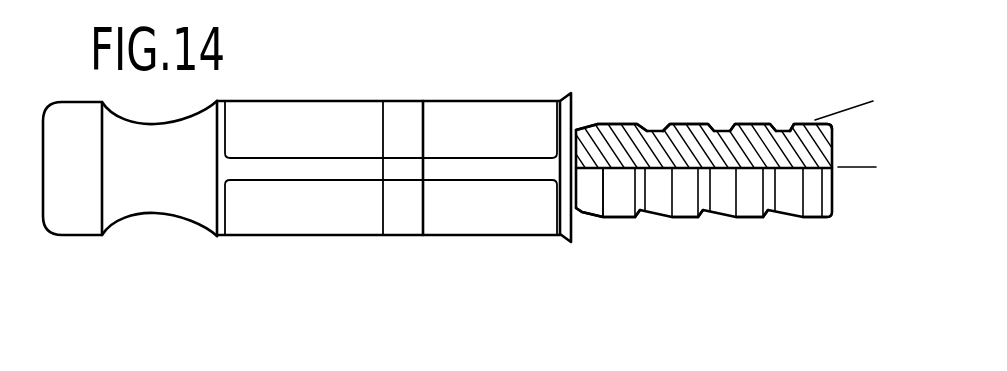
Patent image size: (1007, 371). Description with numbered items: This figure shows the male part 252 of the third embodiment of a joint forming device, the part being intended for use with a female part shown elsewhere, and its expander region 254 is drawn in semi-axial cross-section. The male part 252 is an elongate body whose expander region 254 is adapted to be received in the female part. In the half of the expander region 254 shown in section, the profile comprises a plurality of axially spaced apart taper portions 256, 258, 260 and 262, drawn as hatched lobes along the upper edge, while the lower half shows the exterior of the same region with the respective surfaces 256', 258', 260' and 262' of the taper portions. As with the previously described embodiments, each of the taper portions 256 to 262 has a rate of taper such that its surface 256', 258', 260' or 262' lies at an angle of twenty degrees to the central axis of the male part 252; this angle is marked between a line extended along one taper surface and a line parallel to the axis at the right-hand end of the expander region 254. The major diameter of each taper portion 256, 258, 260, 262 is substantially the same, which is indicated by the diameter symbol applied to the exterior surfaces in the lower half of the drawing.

The male part 252 is at (398, 262).
The expander region 254 is at (703, 246).
The taper portion 256 is at (612, 94).
The taper portion 258 is at (691, 93).
The taper portion 260 is at (761, 93).
The taper portion 262 is at (827, 92).
The surface of taper portion 256' is at (586, 255).
The surface of taper portion 258' is at (665, 256).
The surface of taper portion 260' is at (738, 256).
The surface of taper portion 262' is at (811, 256).